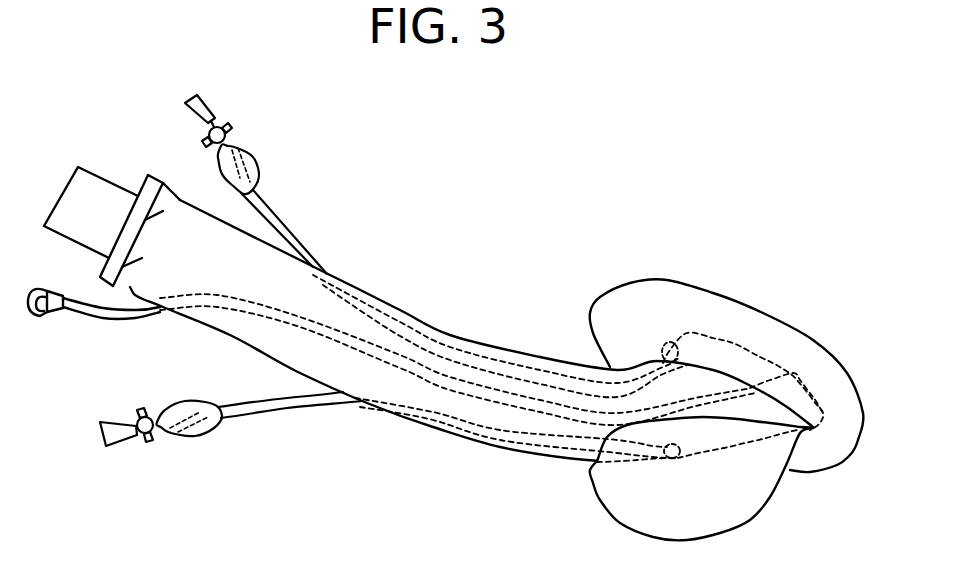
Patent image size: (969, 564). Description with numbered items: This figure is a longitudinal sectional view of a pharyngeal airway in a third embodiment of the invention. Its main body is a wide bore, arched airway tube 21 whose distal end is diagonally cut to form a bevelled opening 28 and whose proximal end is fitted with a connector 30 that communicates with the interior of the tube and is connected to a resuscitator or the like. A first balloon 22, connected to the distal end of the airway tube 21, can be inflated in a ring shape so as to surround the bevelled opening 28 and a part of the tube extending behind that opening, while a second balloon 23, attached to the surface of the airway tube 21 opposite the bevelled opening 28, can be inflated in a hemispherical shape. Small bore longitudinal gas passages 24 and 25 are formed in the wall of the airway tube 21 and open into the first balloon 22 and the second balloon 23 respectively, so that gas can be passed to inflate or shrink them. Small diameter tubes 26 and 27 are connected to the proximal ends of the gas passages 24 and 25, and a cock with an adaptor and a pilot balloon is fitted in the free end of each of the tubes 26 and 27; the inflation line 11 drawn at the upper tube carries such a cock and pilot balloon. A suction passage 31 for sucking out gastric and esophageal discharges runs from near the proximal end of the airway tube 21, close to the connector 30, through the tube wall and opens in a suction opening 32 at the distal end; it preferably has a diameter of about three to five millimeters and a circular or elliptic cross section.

The inflation line with pilot balloon and valve 11 is at (258, 163).
The airway tube 21 is at (202, 222).
The first balloon 22 is at (692, 300).
The second balloon 23 is at (723, 497).
The gas passage 24 is at (393, 312).
The gas passage 25 is at (440, 427).
The tube 26 is at (292, 227).
The tube 27 is at (277, 403).
The bevelled opening 28 is at (742, 343).
The connector 30 is at (98, 185).
The suction passage 31 is at (428, 367).
The suction opening 32 is at (793, 373).